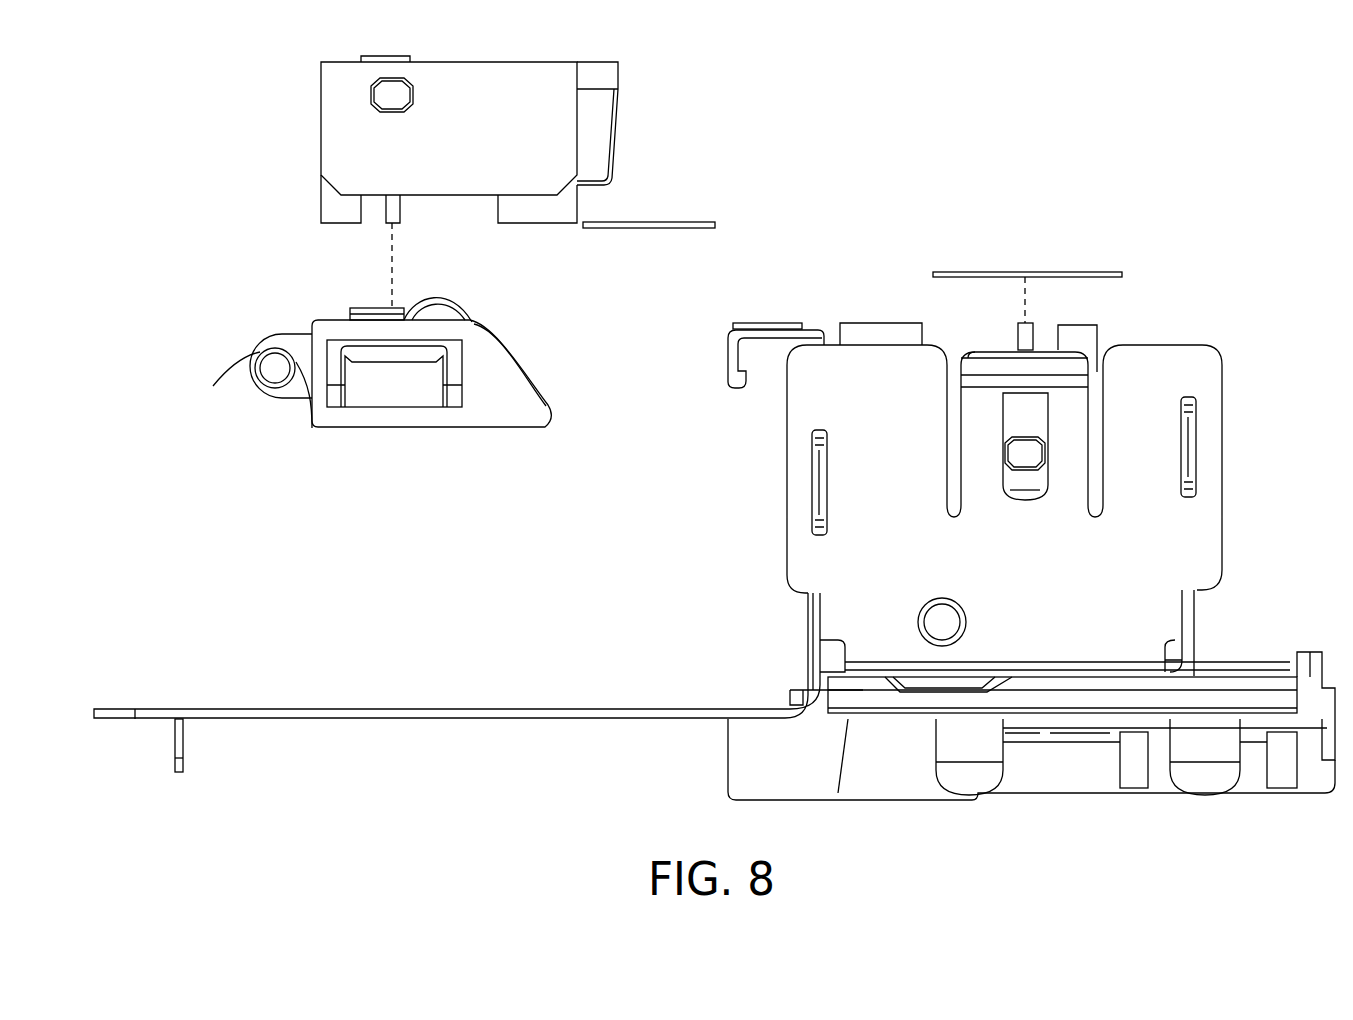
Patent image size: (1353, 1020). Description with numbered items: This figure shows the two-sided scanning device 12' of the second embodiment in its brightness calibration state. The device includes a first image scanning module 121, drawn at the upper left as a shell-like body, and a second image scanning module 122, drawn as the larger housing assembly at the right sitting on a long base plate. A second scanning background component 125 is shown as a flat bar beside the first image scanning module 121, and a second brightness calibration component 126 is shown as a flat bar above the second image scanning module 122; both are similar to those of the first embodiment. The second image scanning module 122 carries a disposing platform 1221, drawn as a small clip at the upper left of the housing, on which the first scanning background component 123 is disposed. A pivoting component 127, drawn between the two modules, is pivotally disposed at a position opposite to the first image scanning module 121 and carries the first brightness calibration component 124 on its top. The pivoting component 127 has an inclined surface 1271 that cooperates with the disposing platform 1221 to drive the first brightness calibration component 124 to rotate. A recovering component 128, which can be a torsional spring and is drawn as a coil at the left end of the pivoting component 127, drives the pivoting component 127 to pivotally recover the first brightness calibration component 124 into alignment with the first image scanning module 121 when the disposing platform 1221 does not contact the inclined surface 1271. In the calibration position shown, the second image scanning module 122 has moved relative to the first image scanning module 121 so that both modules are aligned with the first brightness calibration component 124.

The two-sided scanning device 12' is at (721, 434).
The first image scanning module 121 is at (400, 210).
The second image scanning module 122 is at (1032, 335).
The disposing platform 1221 is at (735, 380).
The first scanning background component 123 is at (768, 326).
The first brightness calibration component 124 is at (374, 310).
The second scanning background component 125 is at (663, 222).
The second brightness calibration component 126 is at (1110, 272).
The pivoting component 127 is at (413, 415).
The inclined surface 1271 is at (517, 368).
The recovering component 128 is at (240, 365).